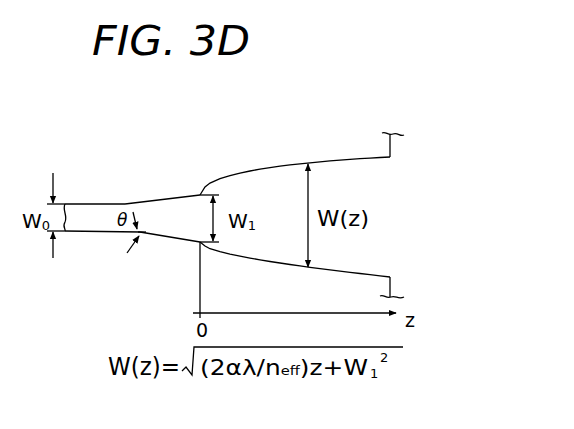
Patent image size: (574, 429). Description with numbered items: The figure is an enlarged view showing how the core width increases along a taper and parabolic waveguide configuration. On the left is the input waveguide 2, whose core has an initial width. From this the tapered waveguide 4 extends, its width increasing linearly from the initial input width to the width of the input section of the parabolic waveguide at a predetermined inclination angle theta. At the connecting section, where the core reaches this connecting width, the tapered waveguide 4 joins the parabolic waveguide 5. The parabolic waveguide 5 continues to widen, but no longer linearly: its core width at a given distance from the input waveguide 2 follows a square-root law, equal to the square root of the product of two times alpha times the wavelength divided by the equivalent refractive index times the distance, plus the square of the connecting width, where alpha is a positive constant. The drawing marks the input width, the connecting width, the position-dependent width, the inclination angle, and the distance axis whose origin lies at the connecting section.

The input waveguide 2 is at (88, 215).
The tapered waveguide 4 is at (187, 213).
The parabolic waveguide 5 is at (347, 182).